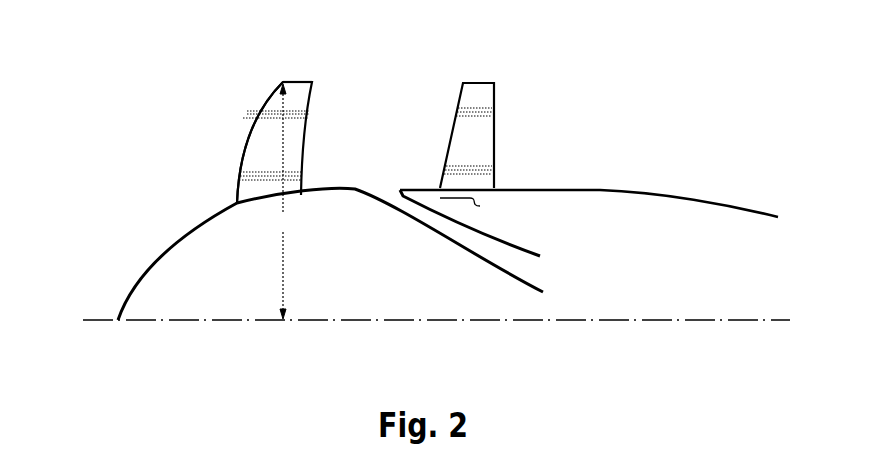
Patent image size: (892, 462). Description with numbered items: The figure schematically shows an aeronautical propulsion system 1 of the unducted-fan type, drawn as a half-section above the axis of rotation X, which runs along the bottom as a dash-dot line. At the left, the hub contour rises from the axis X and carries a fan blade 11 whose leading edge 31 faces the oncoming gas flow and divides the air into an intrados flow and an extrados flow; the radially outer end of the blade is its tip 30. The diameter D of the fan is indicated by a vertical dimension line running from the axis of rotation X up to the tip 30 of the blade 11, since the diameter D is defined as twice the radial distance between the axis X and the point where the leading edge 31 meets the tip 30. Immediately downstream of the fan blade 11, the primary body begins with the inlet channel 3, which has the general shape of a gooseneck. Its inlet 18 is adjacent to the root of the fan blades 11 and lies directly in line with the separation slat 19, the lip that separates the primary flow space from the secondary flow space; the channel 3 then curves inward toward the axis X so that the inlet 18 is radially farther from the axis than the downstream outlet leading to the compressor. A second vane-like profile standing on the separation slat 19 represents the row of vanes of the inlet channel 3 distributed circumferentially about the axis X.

The propulsion system 1 is at (128, 170).
The inlet channel 3 is at (470, 228).
The fan blades 11 is at (261, 160).
The inlet 18 is at (388, 190).
The separation slat 19 is at (420, 198).
The tip 30 is at (297, 82).
The leading edge 31 is at (258, 112).
The diameter of the fan D is at (283, 201).
The axis of rotation X is at (90, 322).